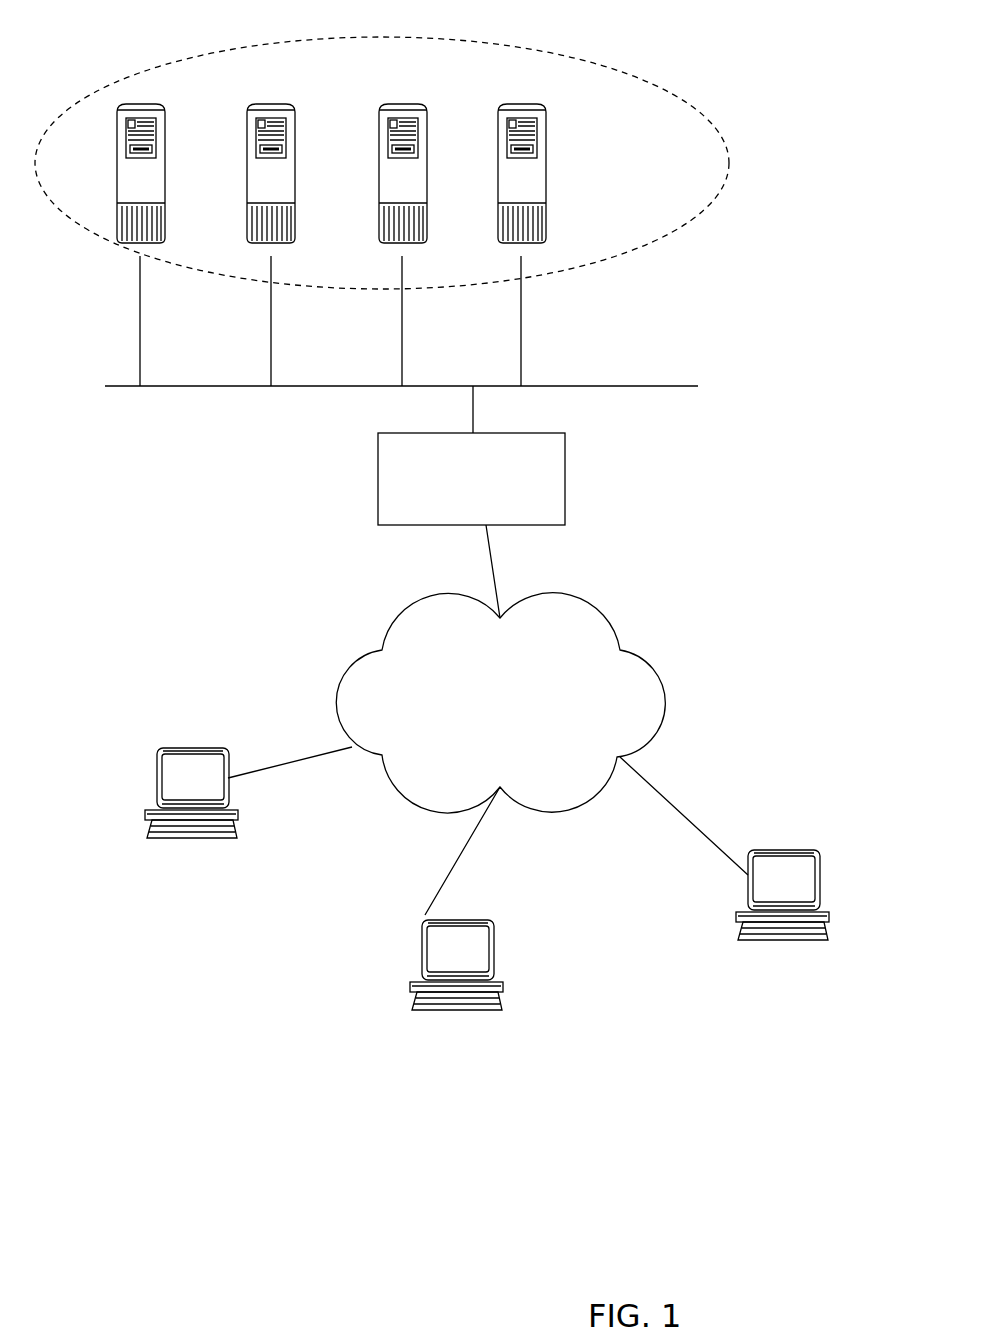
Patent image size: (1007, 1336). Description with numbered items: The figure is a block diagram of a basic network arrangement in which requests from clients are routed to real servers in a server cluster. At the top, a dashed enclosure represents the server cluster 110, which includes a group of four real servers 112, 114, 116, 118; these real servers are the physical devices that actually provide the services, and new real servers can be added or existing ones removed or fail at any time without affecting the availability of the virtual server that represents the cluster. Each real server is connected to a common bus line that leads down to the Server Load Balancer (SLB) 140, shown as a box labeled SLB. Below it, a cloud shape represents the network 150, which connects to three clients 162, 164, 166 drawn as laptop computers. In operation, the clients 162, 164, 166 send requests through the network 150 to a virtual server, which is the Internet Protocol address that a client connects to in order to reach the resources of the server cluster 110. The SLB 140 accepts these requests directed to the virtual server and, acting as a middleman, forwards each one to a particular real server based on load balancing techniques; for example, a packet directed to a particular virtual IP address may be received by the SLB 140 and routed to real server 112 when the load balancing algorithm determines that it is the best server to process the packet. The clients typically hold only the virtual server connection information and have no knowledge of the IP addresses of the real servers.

The server cluster 110 is at (382, 146).
The real server 112 is at (155, 162).
The real server 114 is at (286, 162).
The real server 116 is at (419, 163).
The real server 118 is at (538, 163).
The Server Load Balancer (SLB) 140 is at (497, 479).
The network 150 is at (501, 703).
The client 162 is at (179, 782).
The client 164 is at (444, 953).
The client 166 is at (791, 881).